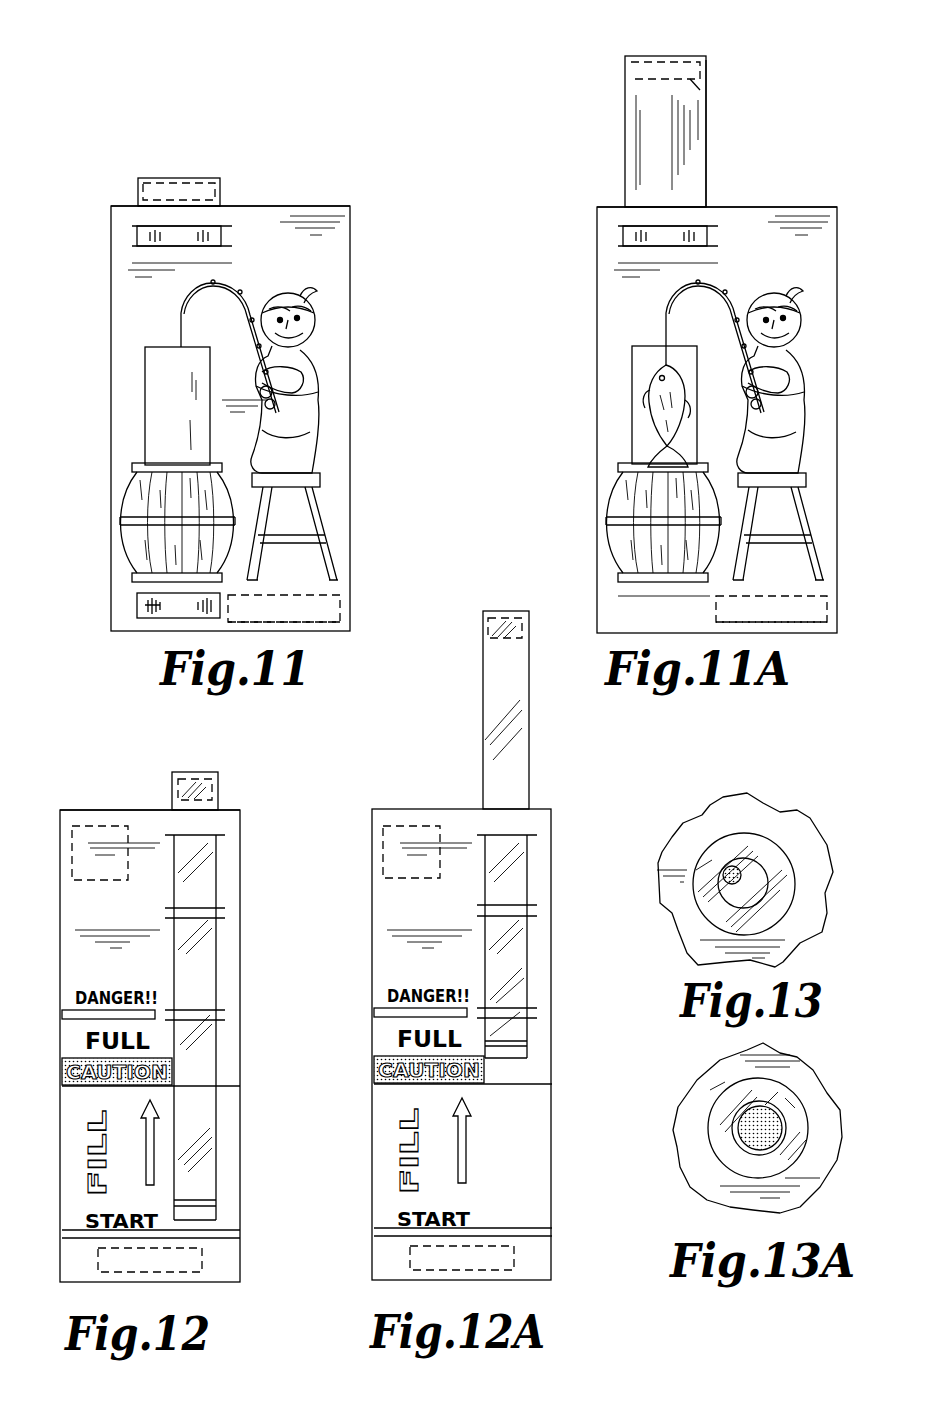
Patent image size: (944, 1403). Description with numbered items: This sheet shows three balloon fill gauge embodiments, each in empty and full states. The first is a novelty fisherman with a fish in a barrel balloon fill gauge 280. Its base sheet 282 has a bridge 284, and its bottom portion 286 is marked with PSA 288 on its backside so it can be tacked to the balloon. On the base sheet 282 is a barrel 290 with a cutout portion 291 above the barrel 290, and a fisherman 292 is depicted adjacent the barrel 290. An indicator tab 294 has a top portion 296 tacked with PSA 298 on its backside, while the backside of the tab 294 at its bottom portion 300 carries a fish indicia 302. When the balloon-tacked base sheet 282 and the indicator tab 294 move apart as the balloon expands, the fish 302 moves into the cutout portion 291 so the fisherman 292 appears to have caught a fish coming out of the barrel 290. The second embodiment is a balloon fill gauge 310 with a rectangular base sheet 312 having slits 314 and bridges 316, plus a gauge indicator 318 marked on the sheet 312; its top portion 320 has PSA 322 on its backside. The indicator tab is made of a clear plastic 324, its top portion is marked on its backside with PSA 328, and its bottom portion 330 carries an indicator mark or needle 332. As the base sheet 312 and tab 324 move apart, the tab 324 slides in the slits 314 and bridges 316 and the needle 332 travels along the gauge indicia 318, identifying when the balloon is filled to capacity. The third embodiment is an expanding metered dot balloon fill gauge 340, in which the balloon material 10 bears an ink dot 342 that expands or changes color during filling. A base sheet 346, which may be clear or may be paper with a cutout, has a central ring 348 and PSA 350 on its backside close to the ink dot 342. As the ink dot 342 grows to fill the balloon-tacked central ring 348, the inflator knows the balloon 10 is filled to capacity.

In FIG. 13, the balloon material 10 is at (783, 826).
In FIG. 13A, the balloon material 10 is at (822, 1098).
In FIG. 11, the novelty fisherman with a fish in a barrel balloon fill gauge 280 is at (330, 134).
In FIG. 11A, the novelty fisherman with a fish in a barrel balloon fill gauge 280 is at (747, 145).
In FIG. 11, the base sheet 282 is at (338, 207).
In FIG. 11A, the base sheet 282 is at (808, 207).
In FIG. 11, the bridge 284 is at (226, 236).
In FIG. 11A, the bridge 284 is at (708, 237).
In FIG. 11, the bottom portion 286 is at (346, 602).
In FIG. 11A, the bottom portion 286 is at (838, 580).
In FIG. 11, the PSA 288 is at (318, 630).
In FIG. 11A, the PSA 288 is at (820, 613).
In FIG. 11, the barrel 290 is at (127, 488).
In FIG. 11A, the barrel 290 is at (614, 504).
In FIG. 11, the cutout portion 291 is at (146, 392).
In FIG. 11A, the cutout portion 291 is at (698, 431).
In FIG. 11, the fisherman 292 is at (318, 393).
In FIG. 11A, the fisherman 292 is at (805, 392).
In FIG. 11, the indicator tab 294 is at (152, 178).
In FIG. 11A, the indicator tab 294 is at (642, 53).
In FIG. 11, the top portion 296 is at (179, 191).
In FIG. 11A, the top portion 296 is at (665, 76).
In FIG. 11, the PSA 298 is at (216, 177).
In FIG. 11A, the PSA 298 is at (708, 92).
In FIG. 11, the bottom portion 300 is at (137, 608).
In FIG. 11A, the bottom portion 300 is at (636, 346).
In FIG. 11A, the fish indicia 302 is at (654, 418).
In FIG. 12, the balloon fill gauge 310 is at (128, 790).
In FIG. 12, the rectangular base sheet 312 is at (60, 820).
In FIG. 12A, the rectangular base sheet 312 is at (398, 809).
In FIG. 12, the slits 314 is at (208, 836).
In FIG. 12A, the slits 314 is at (530, 838).
In FIG. 12, the bridges 316 is at (218, 915).
In FIG. 12A, the bridges 316 is at (520, 906).
In FIG. 12, the gauge indicator 318 is at (82, 1128).
In FIG. 12A, the gauge indicator 318 is at (380, 1039).
In FIG. 12, the top portion 320 is at (148, 810).
In FIG. 12A, the top portion 320 is at (372, 820).
In FIG. 12, the PSA 322 is at (72, 882).
In FIG. 12A, the PSA 322 is at (383, 868).
In FIG. 12, the clear plastic indicator tab 324 is at (219, 792).
In FIG. 12A, the clear plastic indicator tab 324 is at (483, 709).
In FIG. 12, the PSA 328 is at (226, 772).
In FIG. 12A, the PSA 328 is at (530, 632).
In FIG. 12, the bottom portion 330 is at (210, 1212).
In FIG. 12A, the bottom portion 330 is at (520, 1050).
In FIG. 12, the indicator mark or needle 332 is at (206, 1200).
In FIG. 12A, the indicator mark or needle 332 is at (520, 1040).
In FIG. 13, the expanding metered dot balloon fill gauge 340 is at (822, 856).
In FIG. 13A, the expanding metered dot balloon fill gauge 340 is at (831, 1090).
In FIG. 13, the ink dot 342 is at (733, 866).
In FIG. 13A, the ink dot 342 is at (740, 1145).
In FIG. 13, the base sheet 346 is at (788, 908).
In FIG. 13A, the base sheet 346 is at (800, 1135).
In FIG. 13, the central ring 348 is at (752, 873).
In FIG. 13A, the central ring 348 is at (774, 1100).
In FIG. 13, the PSA 350 is at (707, 860).
In FIG. 13A, the PSA 350 is at (720, 1090).